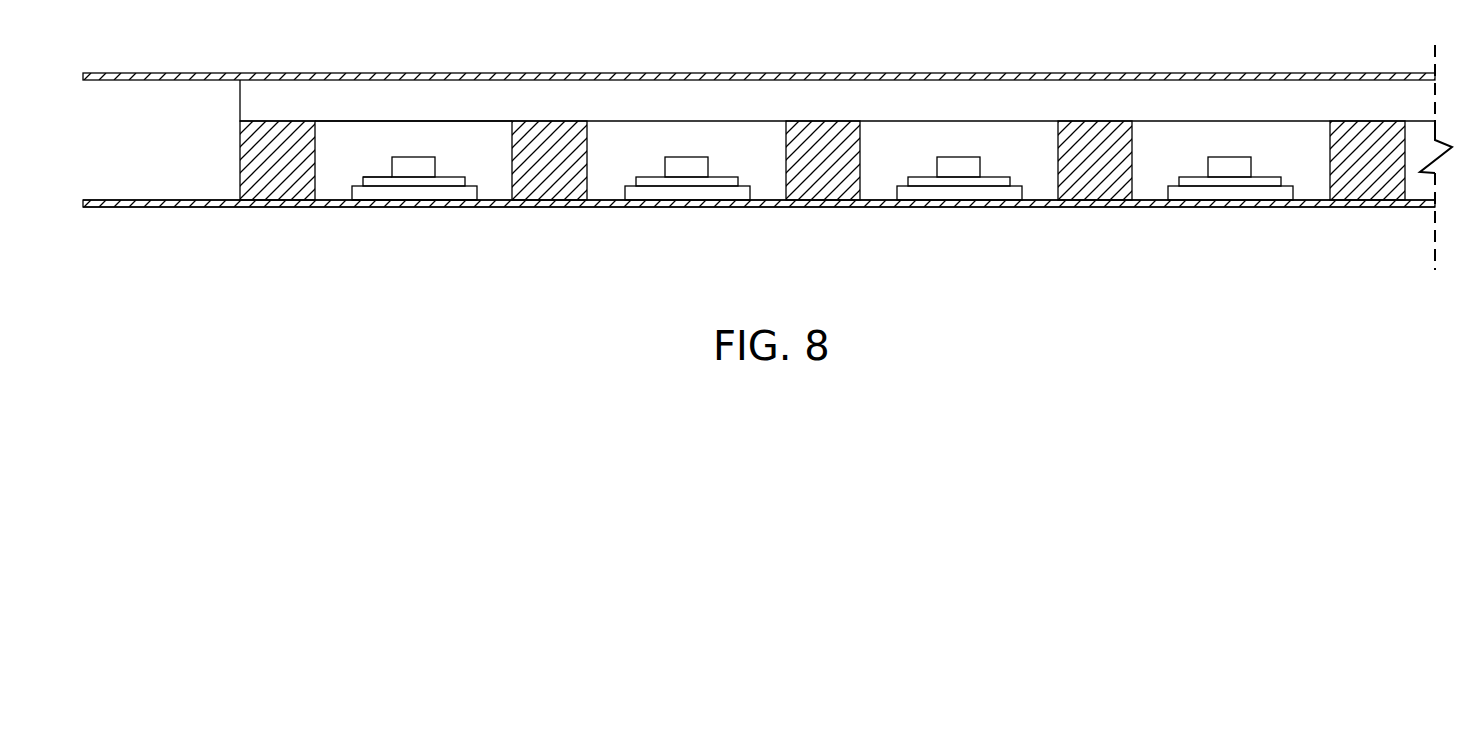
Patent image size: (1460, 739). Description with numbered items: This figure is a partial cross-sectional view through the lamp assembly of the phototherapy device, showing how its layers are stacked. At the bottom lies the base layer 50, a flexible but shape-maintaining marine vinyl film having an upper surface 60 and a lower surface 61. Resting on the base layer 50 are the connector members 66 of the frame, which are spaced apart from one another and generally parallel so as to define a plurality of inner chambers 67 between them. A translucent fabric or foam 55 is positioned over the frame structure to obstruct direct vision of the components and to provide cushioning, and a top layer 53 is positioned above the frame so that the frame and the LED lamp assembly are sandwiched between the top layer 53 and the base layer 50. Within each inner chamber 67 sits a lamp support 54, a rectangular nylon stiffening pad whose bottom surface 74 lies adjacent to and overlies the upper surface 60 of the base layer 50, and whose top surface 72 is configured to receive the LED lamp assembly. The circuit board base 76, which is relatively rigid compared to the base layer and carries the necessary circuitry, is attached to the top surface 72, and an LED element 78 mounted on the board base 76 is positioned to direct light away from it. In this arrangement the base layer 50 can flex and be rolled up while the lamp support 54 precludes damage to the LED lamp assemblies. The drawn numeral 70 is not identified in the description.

The base layer 50 is at (121, 209).
The top layer 53 is at (124, 71).
The lamp support 54 is at (428, 141).
The translucent fabric or foam 55 is at (293, 102).
The upper surface 60 is at (125, 200).
The lower surface 61 is at (183, 208).
The connector members 66 is at (562, 194).
The inner chambers 67 is at (493, 153).
The package base 70 is at (438, 201).
The top surface 72 is at (412, 177).
The bottom surface 74 is at (355, 201).
The circuit board base 76 is at (373, 175).
The LED element 78 is at (416, 155).